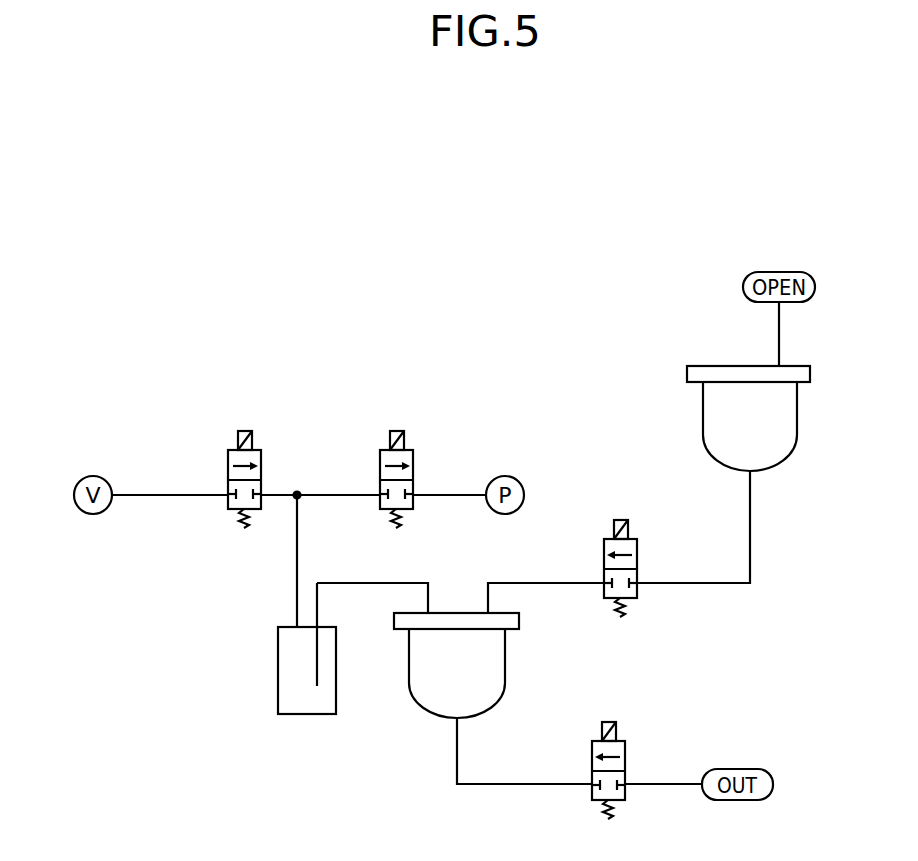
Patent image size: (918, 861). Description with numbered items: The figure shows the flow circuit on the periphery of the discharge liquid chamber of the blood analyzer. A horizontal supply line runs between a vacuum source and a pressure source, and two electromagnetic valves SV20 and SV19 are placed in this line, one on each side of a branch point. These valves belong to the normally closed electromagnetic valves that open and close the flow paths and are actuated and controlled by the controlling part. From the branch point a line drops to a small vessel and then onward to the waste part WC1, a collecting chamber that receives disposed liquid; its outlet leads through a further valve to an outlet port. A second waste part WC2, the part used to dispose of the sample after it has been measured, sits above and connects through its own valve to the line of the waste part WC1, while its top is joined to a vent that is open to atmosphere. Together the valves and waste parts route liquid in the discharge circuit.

The electromagnetic valve SV20 is at (237, 460).
The electromagnetic valve SV19 is at (386, 460).
The waste part WC1 is at (456, 665).
The waste part WC2 is at (748, 418).